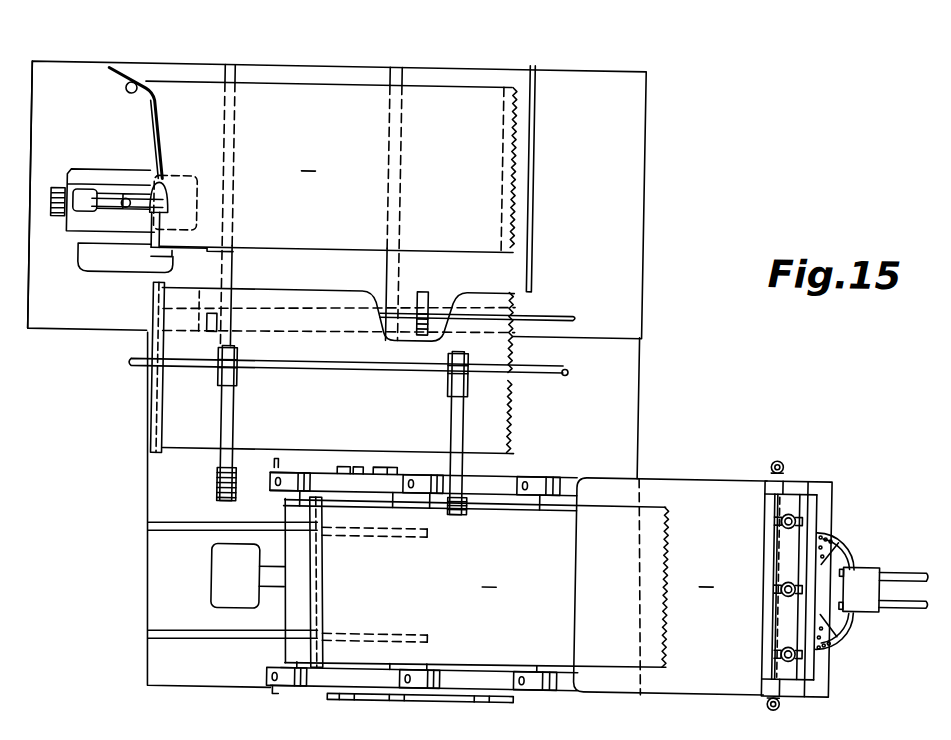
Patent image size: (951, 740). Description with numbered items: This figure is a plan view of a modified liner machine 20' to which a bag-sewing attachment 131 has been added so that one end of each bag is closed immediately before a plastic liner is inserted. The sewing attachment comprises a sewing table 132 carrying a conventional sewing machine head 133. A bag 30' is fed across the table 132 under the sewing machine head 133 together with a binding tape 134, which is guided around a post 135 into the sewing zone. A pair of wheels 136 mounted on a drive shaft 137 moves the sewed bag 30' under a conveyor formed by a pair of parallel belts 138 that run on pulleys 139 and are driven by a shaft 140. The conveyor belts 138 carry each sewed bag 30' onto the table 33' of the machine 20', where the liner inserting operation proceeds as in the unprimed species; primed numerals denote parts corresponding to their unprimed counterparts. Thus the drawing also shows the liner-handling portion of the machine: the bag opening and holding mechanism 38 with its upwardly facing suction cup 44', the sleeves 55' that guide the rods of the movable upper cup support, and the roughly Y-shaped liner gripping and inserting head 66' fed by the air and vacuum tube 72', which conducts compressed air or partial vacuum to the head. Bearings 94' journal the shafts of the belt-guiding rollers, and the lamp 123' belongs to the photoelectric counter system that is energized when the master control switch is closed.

The bag-sewing attachment 131 is at (44, 68).
The sewing table 132 is at (37, 127).
The sewing machine head 133 is at (93, 178).
The binding tape 134 is at (153, 156).
The post 135 is at (121, 97).
The wheels 136 is at (204, 302).
The drive shaft 137 is at (560, 316).
The conveyor belts 138 is at (234, 415).
The pulleys 139 is at (236, 361).
The shaft 140 is at (128, 369).
The bag 30' is at (478, 409).
The lamp 123' is at (328, 486).
The bearings 94' is at (432, 583).
The liner machine 20' is at (670, 556).
The tilted table 33' is at (708, 576).
The bag opening and holding mechanism 38 is at (792, 487).
The sleeves 55' is at (762, 569).
The suction cup 44' is at (757, 587).
The liner gripping and inserting head 66' is at (860, 575).
The air and vacuum tube 72' is at (911, 572).